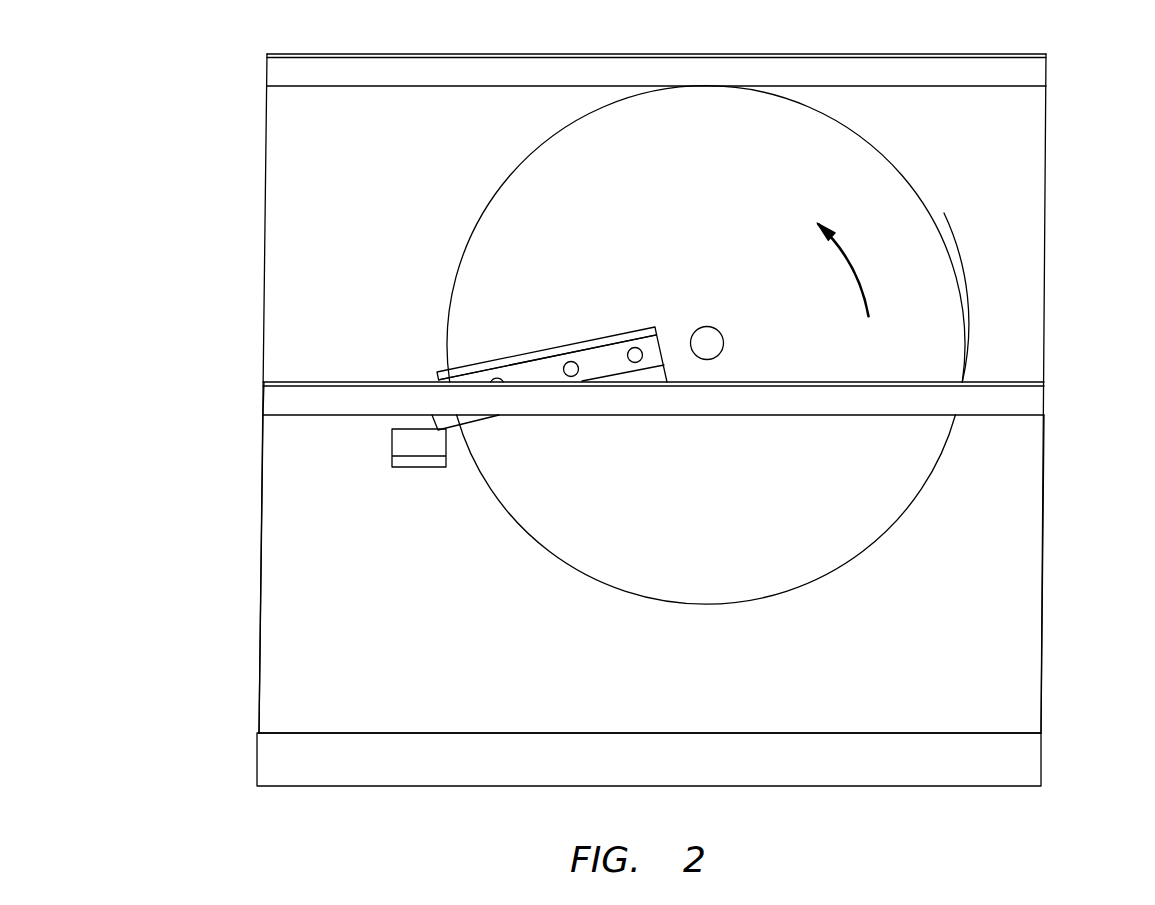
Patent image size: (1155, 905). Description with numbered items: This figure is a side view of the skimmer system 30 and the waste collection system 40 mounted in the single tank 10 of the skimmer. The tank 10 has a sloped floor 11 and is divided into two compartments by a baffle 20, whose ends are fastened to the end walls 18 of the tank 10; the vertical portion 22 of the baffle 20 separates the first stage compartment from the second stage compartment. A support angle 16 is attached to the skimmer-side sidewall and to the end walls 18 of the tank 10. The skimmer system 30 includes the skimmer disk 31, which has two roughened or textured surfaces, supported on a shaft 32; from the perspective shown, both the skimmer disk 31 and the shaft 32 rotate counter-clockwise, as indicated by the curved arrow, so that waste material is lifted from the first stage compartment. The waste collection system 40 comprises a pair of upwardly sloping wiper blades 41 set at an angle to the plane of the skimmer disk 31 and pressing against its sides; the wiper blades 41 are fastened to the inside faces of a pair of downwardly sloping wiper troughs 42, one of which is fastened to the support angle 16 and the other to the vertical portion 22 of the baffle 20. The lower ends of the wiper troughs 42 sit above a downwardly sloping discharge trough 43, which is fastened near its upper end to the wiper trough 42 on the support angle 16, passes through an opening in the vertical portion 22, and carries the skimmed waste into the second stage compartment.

The tank 10 is at (1060, 238).
The sloped floor 11 is at (900, 747).
The support angle 16 is at (1027, 398).
The end walls 18 is at (260, 602).
The baffle 20 is at (708, 718).
The vertical portion 22 is at (890, 643).
The skimmer system 30 is at (932, 168).
The skimmer disk 31 is at (940, 311).
The shaft 32 is at (708, 328).
The waste collection system 40 is at (633, 295).
The wiper blades 41 is at (582, 355).
The wiper troughs 42 is at (662, 372).
The discharge trough 43 is at (397, 447).